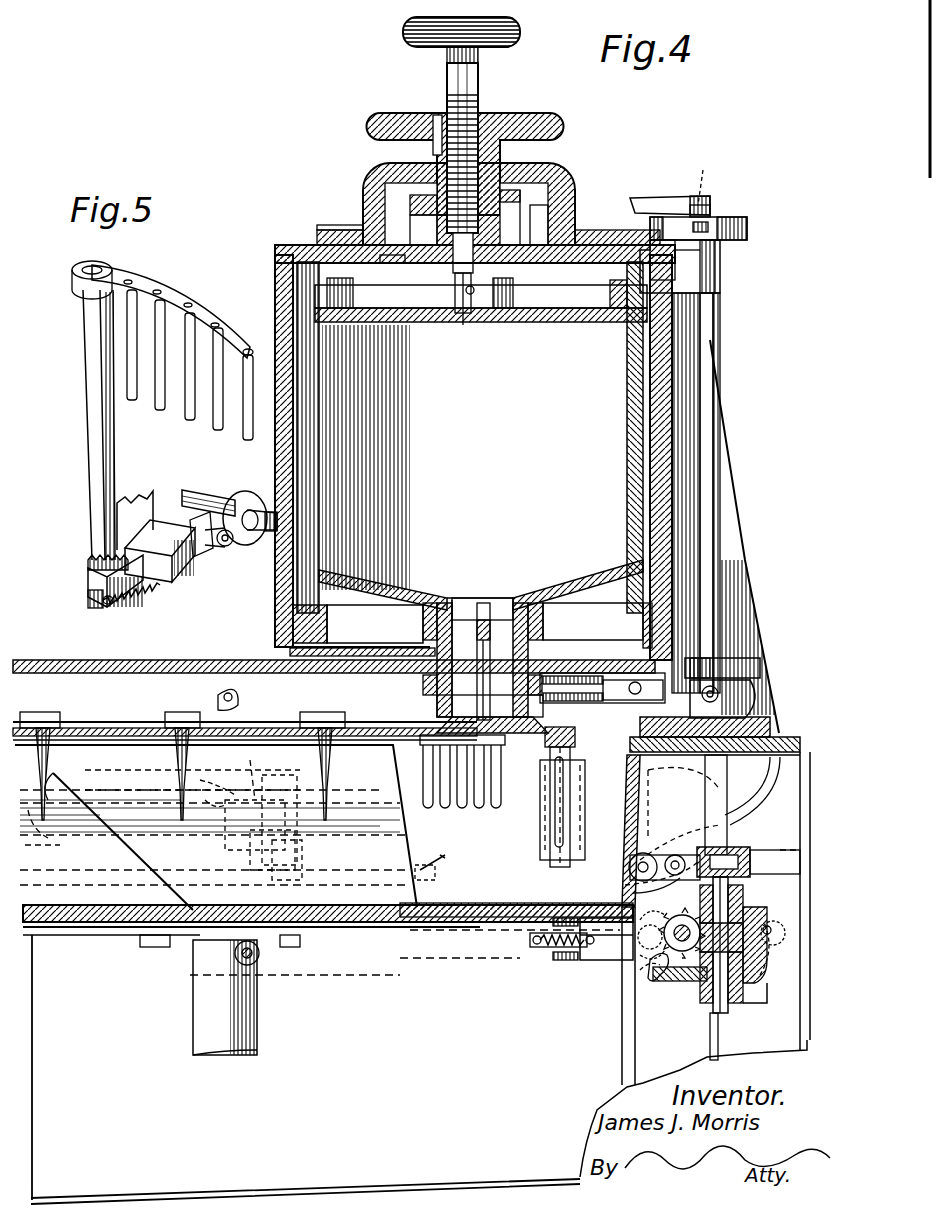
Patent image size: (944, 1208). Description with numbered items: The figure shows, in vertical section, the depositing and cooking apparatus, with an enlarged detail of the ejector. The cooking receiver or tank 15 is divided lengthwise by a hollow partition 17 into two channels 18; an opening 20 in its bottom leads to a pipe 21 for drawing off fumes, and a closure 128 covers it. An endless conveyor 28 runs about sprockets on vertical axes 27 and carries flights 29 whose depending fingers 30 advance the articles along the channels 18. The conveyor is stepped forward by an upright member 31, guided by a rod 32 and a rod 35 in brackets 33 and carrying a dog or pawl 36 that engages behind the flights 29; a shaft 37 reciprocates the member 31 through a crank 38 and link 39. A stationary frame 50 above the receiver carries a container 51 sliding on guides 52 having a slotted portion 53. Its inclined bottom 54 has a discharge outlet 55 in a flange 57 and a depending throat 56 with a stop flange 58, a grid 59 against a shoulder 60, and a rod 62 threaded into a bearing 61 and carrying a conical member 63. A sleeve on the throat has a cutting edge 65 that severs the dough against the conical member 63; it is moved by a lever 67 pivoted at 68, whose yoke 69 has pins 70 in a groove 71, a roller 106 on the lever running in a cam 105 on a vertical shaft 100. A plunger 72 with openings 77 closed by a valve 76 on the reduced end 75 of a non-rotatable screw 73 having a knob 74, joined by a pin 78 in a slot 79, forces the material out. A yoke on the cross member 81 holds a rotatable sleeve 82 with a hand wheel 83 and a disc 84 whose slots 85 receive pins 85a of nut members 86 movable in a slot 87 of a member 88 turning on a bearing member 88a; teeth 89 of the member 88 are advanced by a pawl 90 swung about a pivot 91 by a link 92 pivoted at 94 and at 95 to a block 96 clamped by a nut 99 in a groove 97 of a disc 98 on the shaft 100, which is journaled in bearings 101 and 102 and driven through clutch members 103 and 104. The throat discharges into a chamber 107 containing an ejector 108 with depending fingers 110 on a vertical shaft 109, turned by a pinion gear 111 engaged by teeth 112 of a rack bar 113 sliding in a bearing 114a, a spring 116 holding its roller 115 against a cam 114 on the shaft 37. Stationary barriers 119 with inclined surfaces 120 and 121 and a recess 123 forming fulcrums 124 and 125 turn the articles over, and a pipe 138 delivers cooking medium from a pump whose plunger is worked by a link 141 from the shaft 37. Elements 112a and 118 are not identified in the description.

In FIG. 4, the cooking receiver 15 is at (470, 930).
In FIG. 4, the hollow partition 17 is at (285, 770).
In FIG. 4, the channels 18 is at (425, 925).
In FIG. 4, the opening 20 is at (320, 775).
In FIG. 4, the pipe 21 is at (193, 1008).
In FIG. 4, the vertical axes 27 is at (370, 722).
In FIG. 4, the endless conveyor 28 is at (260, 728).
In FIG. 4, the flights 29 is at (45, 722).
In FIG. 4, the depending fingers 30 is at (478, 825).
In FIG. 4, the upright member 31 is at (240, 850).
In FIG. 4, the bar or rod 32 is at (192, 764).
In FIG. 4, the brackets or bearings 33 is at (308, 832).
In FIG. 4, the bar or rod 35 is at (360, 880).
In FIG. 4, the dog or pawl 36 is at (218, 705).
In FIG. 4, the shaft 37 is at (700, 990).
In FIG. 5, the shaft 37 is at (208, 495).
In FIG. 4, the disc or crank 38 is at (710, 1033).
In FIG. 4, the link 39 is at (368, 968).
In FIG. 4, the frame 50 is at (278, 300).
In FIG. 4, the hopper or container 51 is at (318, 438).
In FIG. 4, the guides 52 is at (640, 614).
In FIG. 4, the slotted portion 53 is at (361, 626).
In FIG. 4, the bottom of container 54 is at (560, 585).
In FIG. 4, the discharge outlet 55 is at (482, 600).
In FIG. 4, the depending throat 56 is at (492, 640).
In FIG. 4, the flange 57 is at (540, 620).
In FIG. 4, the annular flange 58 is at (435, 658).
In FIG. 4, the grid 59 is at (462, 612).
In FIG. 4, the shoulder 60 is at (540, 600).
In FIG. 4, the bearing 61 is at (460, 600).
In FIG. 4, the rod 62 is at (515, 660).
In FIG. 4, the conical member 63 is at (498, 755).
In FIG. 4, the cutting edge 65 is at (492, 727).
In FIG. 4, the lever 67 is at (605, 703).
In FIG. 4, the pivot 68 is at (525, 660).
In FIG. 4, the open yoke 69 is at (435, 684).
In FIG. 4, the pins 70 is at (437, 700).
In FIG. 4, the peripheral groove 71 is at (530, 665).
In FIG. 4, the plunger 72 is at (570, 312).
In FIG. 4, the non-rotatable screw 73 is at (478, 82).
In FIG. 4, the handle or lifting knob 74 is at (520, 36).
In FIG. 4, the reduced end 75 is at (480, 268).
In FIG. 4, the valve 76 is at (465, 300).
In FIG. 4, the openings 77 is at (452, 305).
In FIG. 4, the pin 78 is at (455, 275).
In FIG. 4, the slot 79 is at (478, 278).
In FIG. 4, the cross member 81 is at (287, 255).
In FIG. 4, the rotatable sleeve 82 is at (545, 160).
In FIG. 4, the hand wheel 83 is at (518, 118).
In FIG. 4, the disc 84 is at (395, 185).
In FIG. 4, the slots 85 is at (420, 198).
In FIG. 4, the pins 85a is at (375, 205).
In FIG. 4, the nut members 86 is at (375, 222).
In FIG. 4, the slot 87 is at (560, 215).
In FIG. 4, the member 88 is at (420, 293).
In FIG. 4, the bearing member 88a is at (398, 258).
In FIG. 4, the teeth 89 is at (340, 225).
In FIG. 4, the pawl 90 is at (768, 920).
In FIG. 4, the pivot 91 is at (262, 960).
In FIG. 4, the link 92 is at (668, 200).
In FIG. 4, the pivotal connection 94 is at (768, 965).
In FIG. 4, the pivotal connection 95 is at (766, 1004).
In FIG. 4, the block 96 is at (700, 250).
In FIG. 4, the groove 97 is at (710, 222).
In FIG. 4, the disc 98 is at (747, 232).
In FIG. 4, the clamping nut 99 is at (700, 215).
In FIG. 4, the vertical shaft 100 is at (705, 476).
In FIG. 4, the bearing 101 is at (722, 285).
In FIG. 4, the bearing 102 is at (745, 712).
In FIG. 4, the clutch member 103 is at (740, 845).
In FIG. 4, the clutch member 104 is at (745, 898).
In FIG. 4, the cam 105 is at (740, 660).
In FIG. 4, the roller 106 is at (735, 690).
In FIG. 4, the chamber 107 is at (485, 905).
In FIG. 4, the ejector 108 is at (575, 735).
In FIG. 5, the ejector 108 is at (160, 292).
In FIG. 4, the vertical shaft 109 is at (533, 812).
In FIG. 5, the vertical shaft 109 is at (86, 418).
In FIG. 4, the depending fingers 110 is at (555, 820).
In FIG. 5, the depending fingers 110 is at (162, 405).
In FIG. 4, the pinion gear 111 is at (530, 945).
In FIG. 5, the pinion gear 111 is at (90, 565).
In FIG. 5, the teeth 112 is at (92, 592).
In FIG. 5, the block 112a is at (155, 540).
In FIG. 4, the rack bar 113 is at (580, 950).
In FIG. 5, the rack bar 113 is at (94, 605).
In FIG. 4, the cam 114 is at (710, 992).
In FIG. 5, the cam 114 is at (245, 495).
In FIG. 4, the bearing 114a is at (615, 965).
In FIG. 4, the roller 115 is at (650, 960).
In FIG. 5, the roller 115 is at (225, 547).
In FIG. 4, the spring 116 is at (555, 950).
In FIG. 5, the spring 116 is at (135, 590).
In FIG. 4, the slide block 118 is at (750, 859).
In FIG. 4, the stationary barriers 119 is at (100, 925).
In FIG. 4, the inclined surface 120 is at (128, 840).
In FIG. 4, the inclined surface 121 is at (200, 822).
In FIG. 4, the recess 123 is at (63, 815).
In FIG. 4, the fulcrum 124 is at (70, 770).
In FIG. 4, the fulcrum 125 is at (55, 848).
In FIG. 4, the closure 128 is at (160, 660).
In FIG. 4, the pipe 138 is at (620, 1063).
In FIG. 4, the link 141 is at (720, 1040).